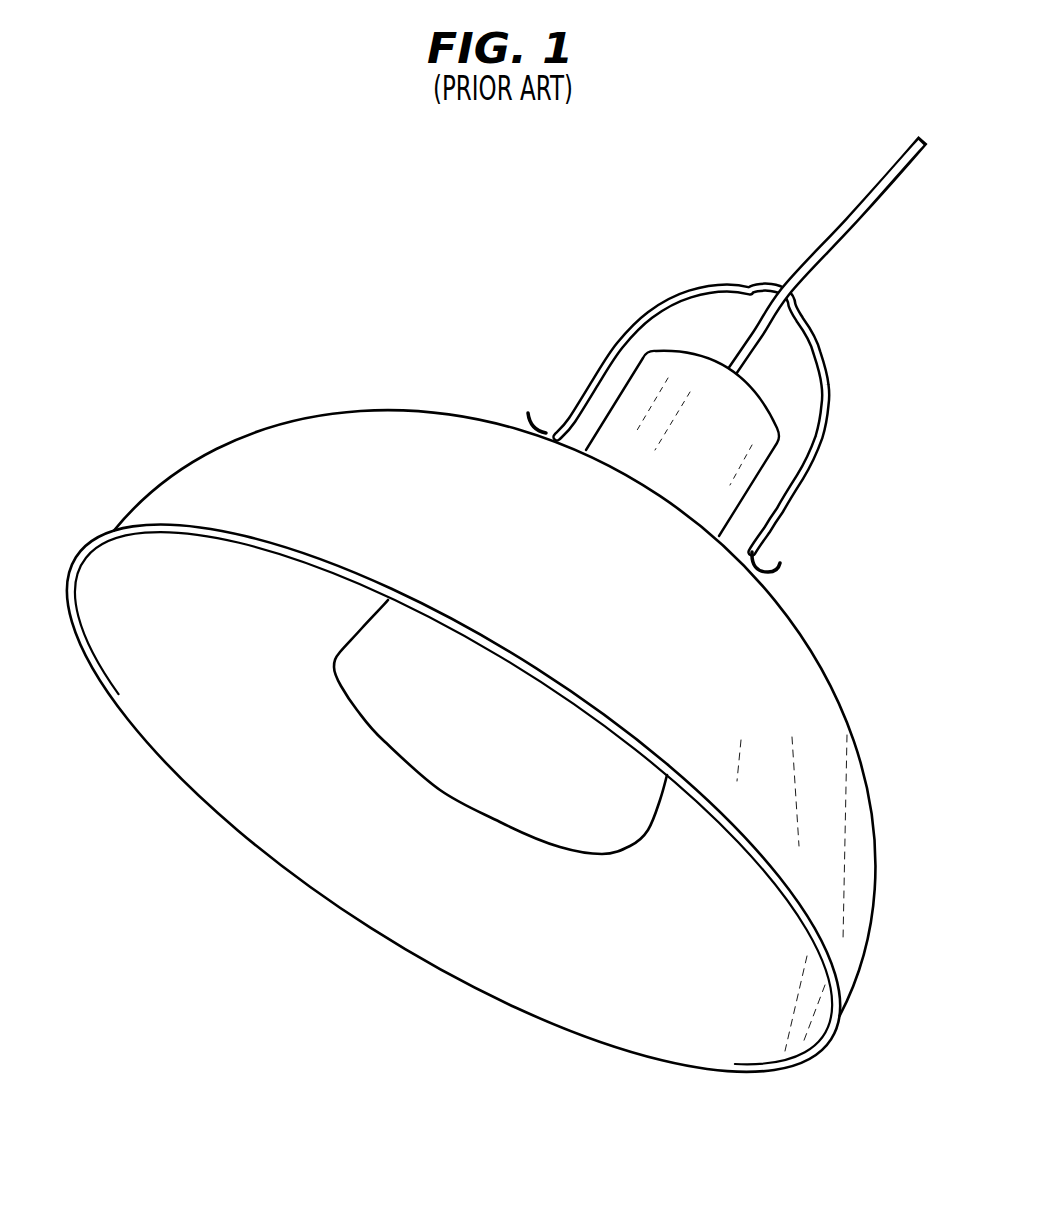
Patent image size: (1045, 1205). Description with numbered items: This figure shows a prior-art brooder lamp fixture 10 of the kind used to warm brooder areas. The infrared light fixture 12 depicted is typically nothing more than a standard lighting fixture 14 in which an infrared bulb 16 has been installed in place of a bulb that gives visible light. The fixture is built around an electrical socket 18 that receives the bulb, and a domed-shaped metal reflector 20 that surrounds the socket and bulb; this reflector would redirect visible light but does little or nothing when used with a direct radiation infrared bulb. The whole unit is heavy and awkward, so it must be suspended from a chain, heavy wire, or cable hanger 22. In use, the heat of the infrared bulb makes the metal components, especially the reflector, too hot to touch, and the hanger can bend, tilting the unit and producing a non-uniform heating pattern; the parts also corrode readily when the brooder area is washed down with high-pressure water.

The brooder lamp fixture 10 is at (476, 755).
The infrared light fixture 12 is at (823, 682).
The standard lighting fixture 14 is at (772, 587).
The infrared bulb 16 is at (463, 786).
The electrical socket 18 is at (733, 478).
The domed-shaped metal reflector 20 is at (305, 417).
The hanger 22 is at (697, 285).